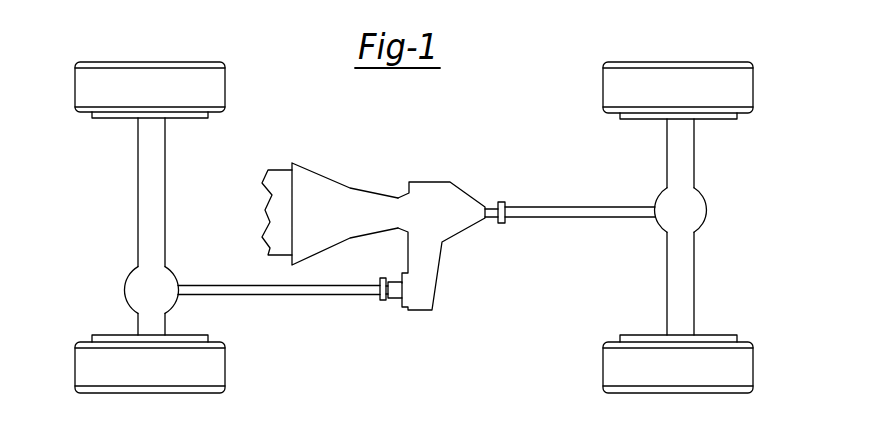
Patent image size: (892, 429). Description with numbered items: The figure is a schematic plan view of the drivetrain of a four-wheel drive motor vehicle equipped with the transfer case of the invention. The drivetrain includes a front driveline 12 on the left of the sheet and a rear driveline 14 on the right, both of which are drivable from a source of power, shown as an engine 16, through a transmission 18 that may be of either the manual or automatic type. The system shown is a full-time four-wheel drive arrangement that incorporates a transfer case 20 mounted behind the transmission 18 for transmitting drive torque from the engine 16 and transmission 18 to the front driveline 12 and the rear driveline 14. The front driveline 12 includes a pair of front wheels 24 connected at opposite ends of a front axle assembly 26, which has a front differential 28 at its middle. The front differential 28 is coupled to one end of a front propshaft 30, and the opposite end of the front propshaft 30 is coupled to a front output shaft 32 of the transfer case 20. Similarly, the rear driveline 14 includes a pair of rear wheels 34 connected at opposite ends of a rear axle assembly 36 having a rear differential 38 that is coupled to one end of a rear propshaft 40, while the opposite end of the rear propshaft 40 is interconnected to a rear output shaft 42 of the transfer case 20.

The front driveline 12 is at (180, 220).
The rear driveline 14 is at (613, 182).
The engine 16 is at (277, 196).
The transmission 18 is at (350, 223).
The transfer case 20 is at (465, 237).
The front wheels 24 is at (110, 85).
The front axle assembly 26 is at (150, 163).
The front differential 28 is at (138, 278).
The front propshaft 30 is at (353, 290).
The front output shaft 32 is at (393, 300).
The rear wheels 34 is at (647, 97).
The rear axle assembly 36 is at (680, 148).
The rear differential 38 is at (690, 208).
The rear propshaft 40 is at (616, 217).
The rear output shaft 42 is at (492, 208).